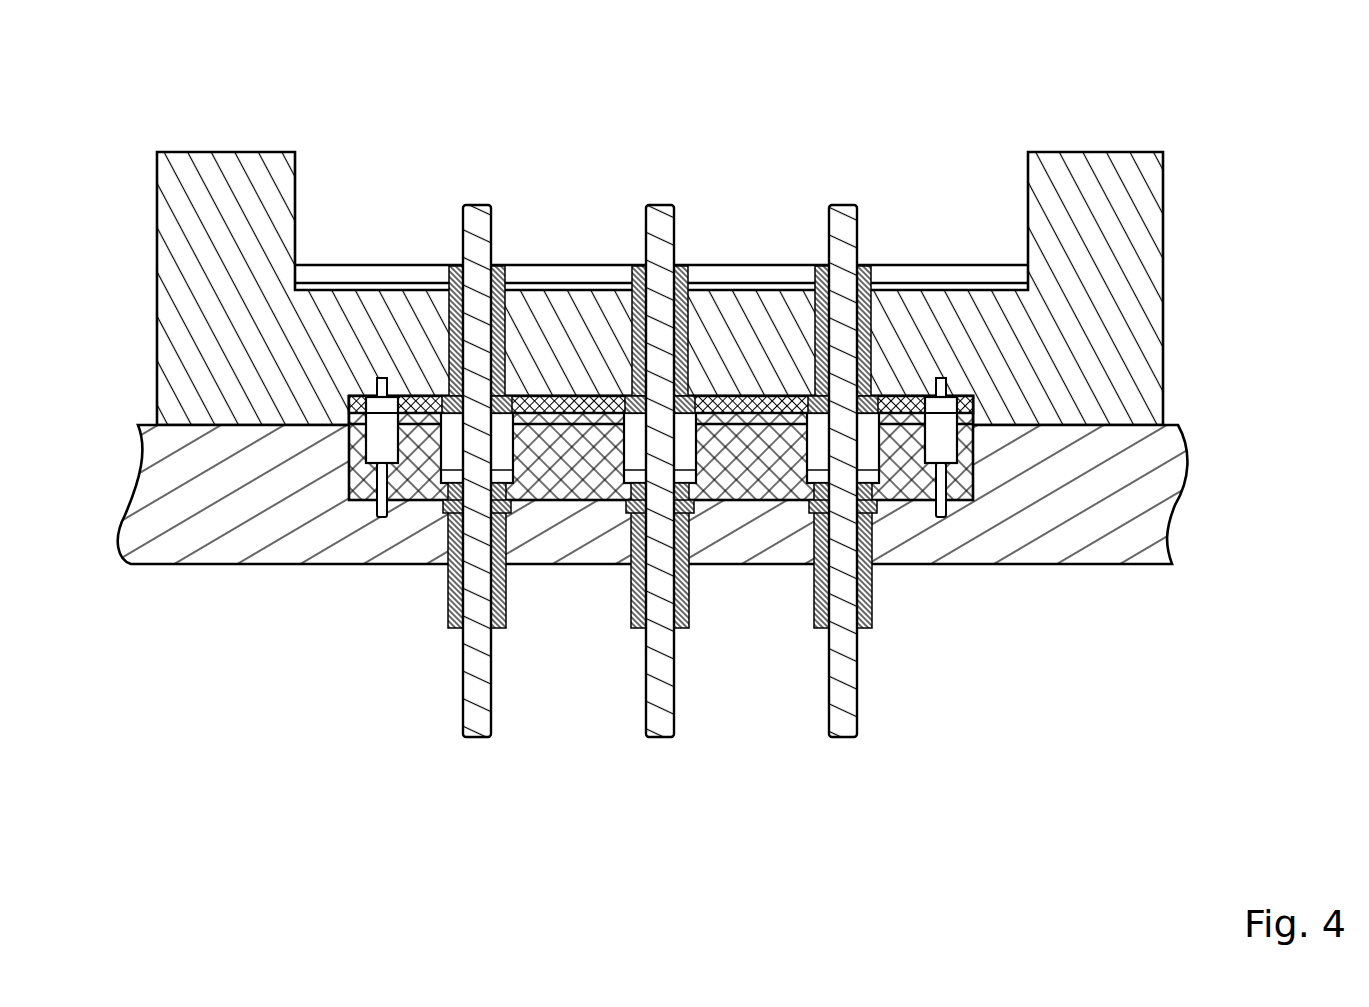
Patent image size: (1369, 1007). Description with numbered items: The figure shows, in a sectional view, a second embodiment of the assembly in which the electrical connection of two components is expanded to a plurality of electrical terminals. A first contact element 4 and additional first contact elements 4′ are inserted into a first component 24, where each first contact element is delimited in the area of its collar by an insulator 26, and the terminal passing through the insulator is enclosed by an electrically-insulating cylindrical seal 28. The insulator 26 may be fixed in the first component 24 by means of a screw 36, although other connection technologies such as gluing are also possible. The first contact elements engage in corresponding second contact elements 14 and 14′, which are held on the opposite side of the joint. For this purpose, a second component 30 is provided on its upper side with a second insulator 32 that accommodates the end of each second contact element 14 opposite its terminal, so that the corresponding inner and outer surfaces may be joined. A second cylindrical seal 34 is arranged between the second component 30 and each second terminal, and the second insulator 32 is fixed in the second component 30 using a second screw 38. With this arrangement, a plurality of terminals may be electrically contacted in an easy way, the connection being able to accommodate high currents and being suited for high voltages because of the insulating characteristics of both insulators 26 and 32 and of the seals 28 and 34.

The first contact element 4 is at (480, 140).
The additional first contact element 4′ is at (662, 140).
The second contact element 14 is at (476, 772).
The corresponding second contact element 14′ is at (659, 772).
The first component 24 is at (1133, 266).
The insulator 26 is at (556, 395).
The cylindrical seal 28 is at (503, 283).
The second component 30 is at (1123, 497).
The second insulator 32 is at (577, 500).
The second cylindrical seal 34 is at (450, 600).
The screw 36 is at (383, 378).
The second screw 38 is at (383, 517).